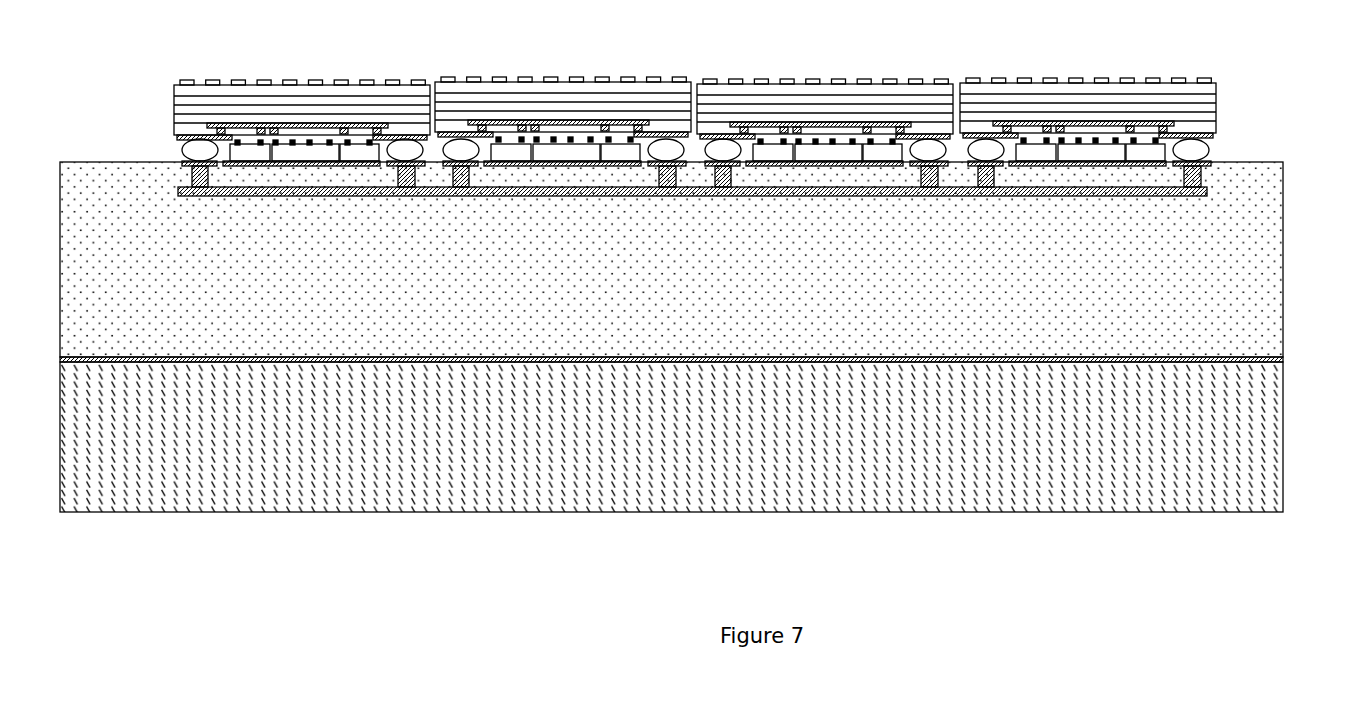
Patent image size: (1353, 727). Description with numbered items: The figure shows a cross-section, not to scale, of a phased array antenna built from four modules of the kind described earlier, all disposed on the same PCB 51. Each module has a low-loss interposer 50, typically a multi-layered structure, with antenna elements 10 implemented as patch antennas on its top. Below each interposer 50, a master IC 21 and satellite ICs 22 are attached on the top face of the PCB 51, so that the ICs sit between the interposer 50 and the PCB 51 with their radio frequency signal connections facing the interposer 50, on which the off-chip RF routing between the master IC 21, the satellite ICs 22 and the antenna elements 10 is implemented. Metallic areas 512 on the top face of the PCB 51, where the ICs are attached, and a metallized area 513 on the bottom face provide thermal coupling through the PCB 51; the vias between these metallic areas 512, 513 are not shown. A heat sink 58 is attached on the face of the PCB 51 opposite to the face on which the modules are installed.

The antenna elements 10 is at (672, 102).
The low-loss interposer 50 is at (672, 81).
The PCB 51 is at (165, 168).
The metallized area 512 is at (282, 165).
The metallized area 513 is at (1283, 357).
The heat sink 58 is at (1267, 435).
The master IC 21 is at (1090, 89).
The satellite ICs 22 is at (1076, 80).